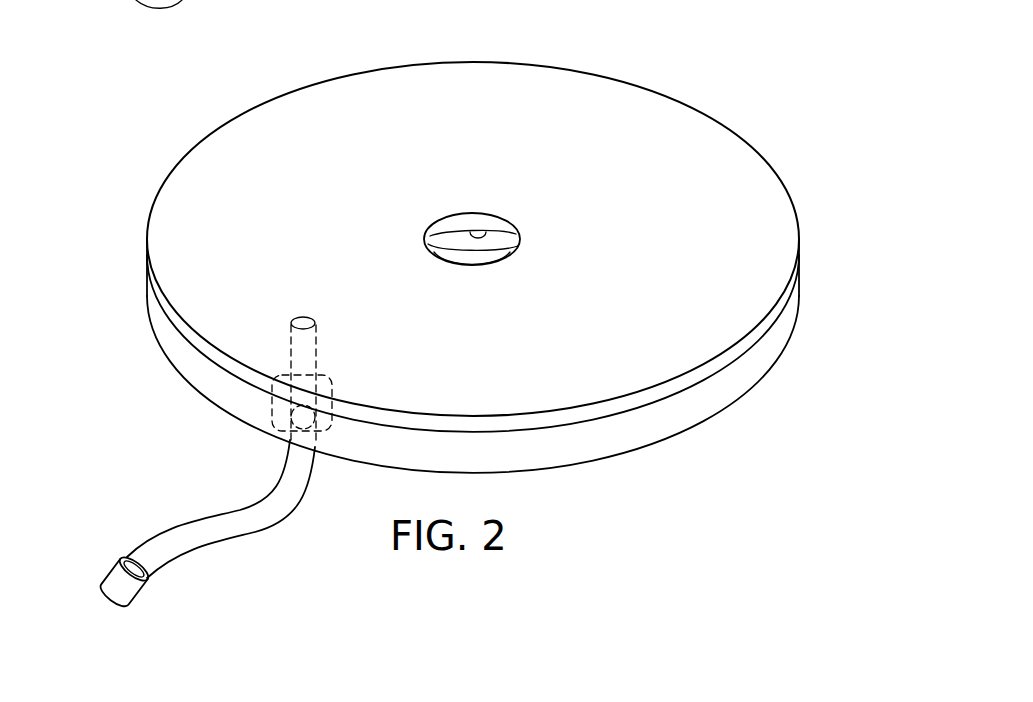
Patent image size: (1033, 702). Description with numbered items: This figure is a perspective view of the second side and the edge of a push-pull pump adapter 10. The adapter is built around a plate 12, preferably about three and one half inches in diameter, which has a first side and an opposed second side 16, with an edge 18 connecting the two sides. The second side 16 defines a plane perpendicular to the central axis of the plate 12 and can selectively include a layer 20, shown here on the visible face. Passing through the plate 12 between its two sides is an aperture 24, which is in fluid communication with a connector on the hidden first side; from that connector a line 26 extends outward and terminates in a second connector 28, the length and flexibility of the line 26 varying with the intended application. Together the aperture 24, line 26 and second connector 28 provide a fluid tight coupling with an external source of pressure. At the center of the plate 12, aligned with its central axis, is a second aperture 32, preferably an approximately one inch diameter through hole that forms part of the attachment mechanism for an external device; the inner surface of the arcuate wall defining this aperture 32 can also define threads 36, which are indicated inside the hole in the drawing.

The push-pull pump adapter 10 is at (688, 80).
The plate 12 is at (637, 458).
The second side 16 is at (725, 158).
The edge 18 is at (745, 386).
The layer 20 is at (598, 318).
The aperture 24 is at (297, 317).
The line 26 is at (215, 507).
The second connector 28 is at (97, 587).
The aperture 32 is at (432, 222).
The threads 36 is at (480, 231).